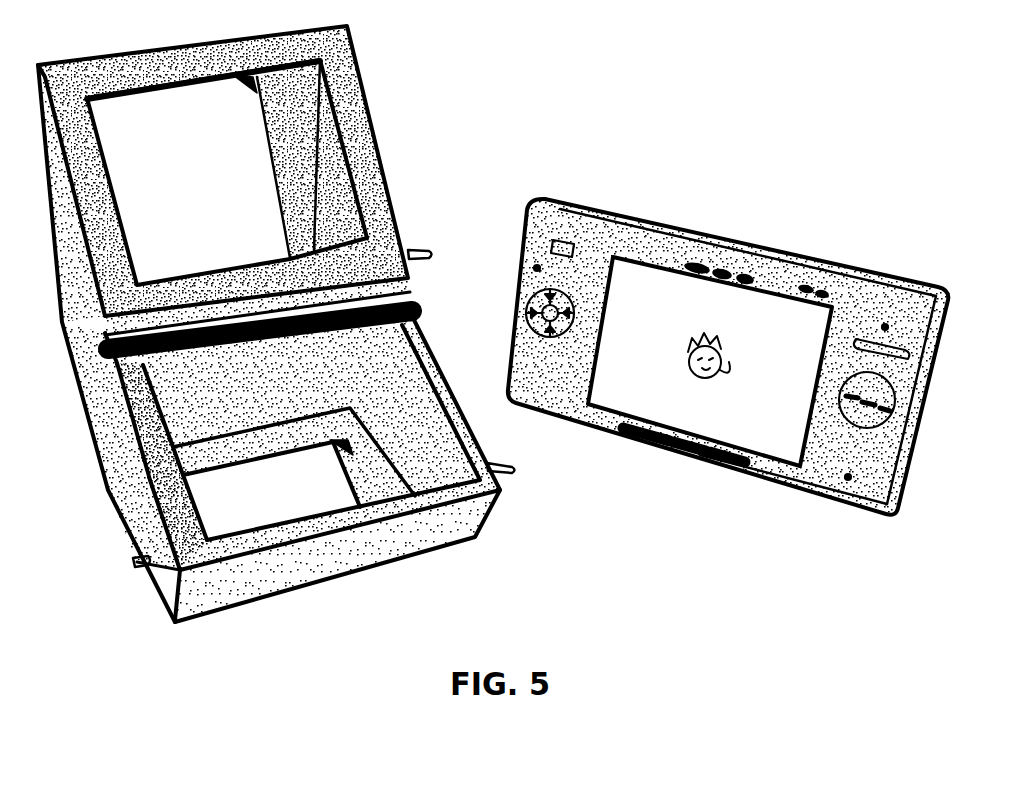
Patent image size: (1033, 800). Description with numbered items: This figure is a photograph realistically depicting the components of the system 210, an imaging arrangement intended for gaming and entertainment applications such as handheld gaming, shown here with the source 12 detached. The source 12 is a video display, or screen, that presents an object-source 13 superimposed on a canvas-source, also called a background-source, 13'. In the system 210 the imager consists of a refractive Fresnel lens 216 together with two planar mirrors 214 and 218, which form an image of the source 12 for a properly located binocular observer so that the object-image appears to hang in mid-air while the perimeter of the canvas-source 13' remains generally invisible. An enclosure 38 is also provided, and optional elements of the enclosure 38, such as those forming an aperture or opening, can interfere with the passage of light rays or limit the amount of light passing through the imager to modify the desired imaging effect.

The system 210 is at (747, 72).
The source 12 is at (678, 340).
The object-source 13 is at (756, 286).
The canvas-source 13' is at (700, 442).
The planar mirror 218 is at (223, 174).
The enclosure 38 is at (268, 299).
The refractive (Fresnel) lens 216 is at (194, 362).
The planar mirror 214 is at (294, 452).